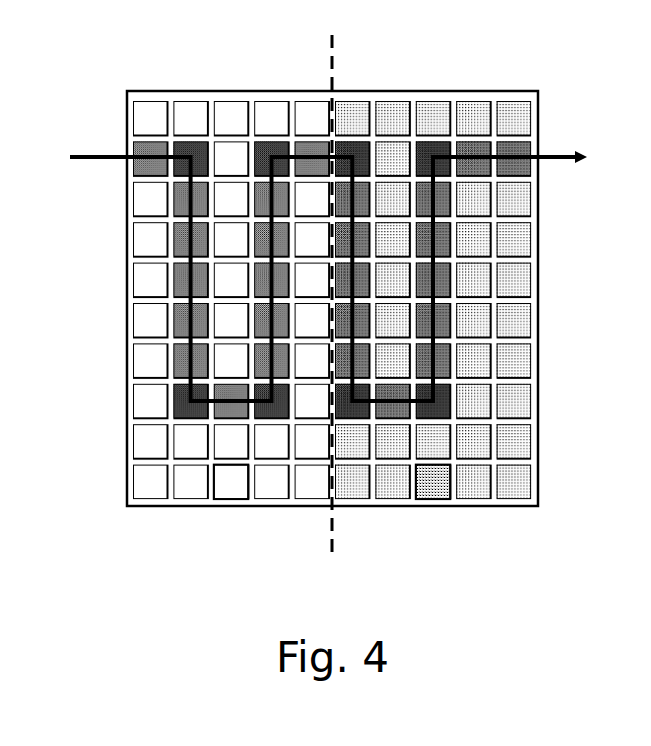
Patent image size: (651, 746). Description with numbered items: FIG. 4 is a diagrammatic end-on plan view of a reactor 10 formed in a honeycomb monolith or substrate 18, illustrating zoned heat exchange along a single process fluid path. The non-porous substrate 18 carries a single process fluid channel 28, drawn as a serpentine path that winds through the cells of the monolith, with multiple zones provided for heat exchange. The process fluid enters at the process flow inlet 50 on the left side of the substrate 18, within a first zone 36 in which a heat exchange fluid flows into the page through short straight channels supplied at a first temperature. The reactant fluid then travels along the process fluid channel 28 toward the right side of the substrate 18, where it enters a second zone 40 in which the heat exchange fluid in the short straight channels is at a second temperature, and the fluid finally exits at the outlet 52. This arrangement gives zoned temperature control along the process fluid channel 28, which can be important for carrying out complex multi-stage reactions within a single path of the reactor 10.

The reactor 10 is at (312, 319).
The honeycomb monolith or substrate 18 is at (274, 304).
The process fluid channel 28 is at (103, 170).
The first zone 36 is at (222, 488).
The second zone 40 is at (443, 488).
The process flow inlet 50 is at (268, 279).
The fluid outlet 52 is at (558, 173).